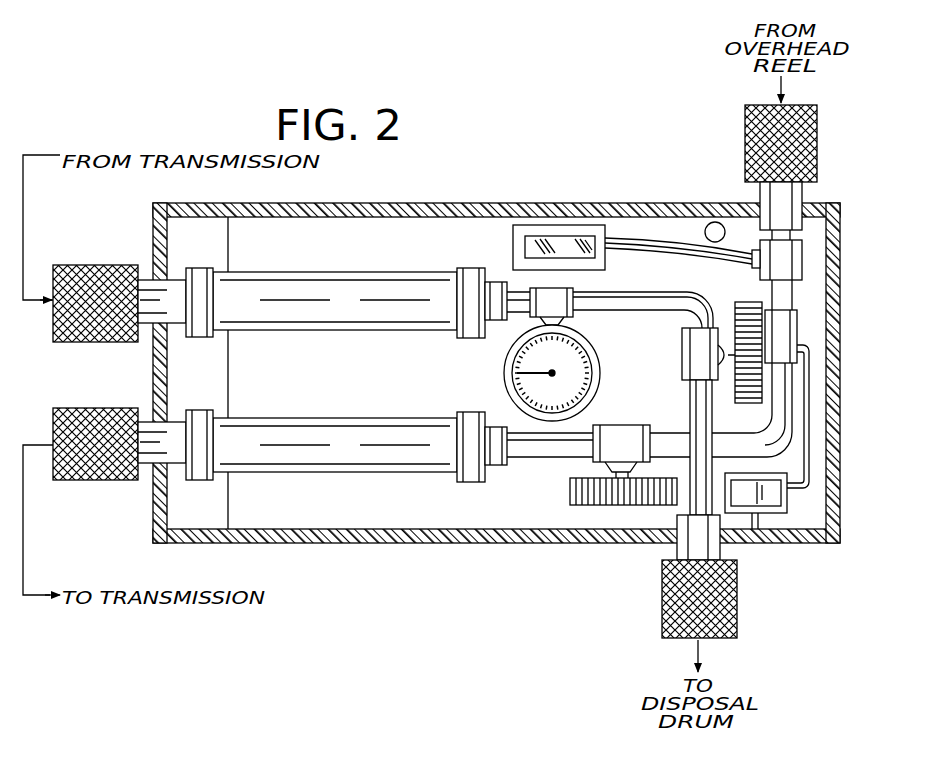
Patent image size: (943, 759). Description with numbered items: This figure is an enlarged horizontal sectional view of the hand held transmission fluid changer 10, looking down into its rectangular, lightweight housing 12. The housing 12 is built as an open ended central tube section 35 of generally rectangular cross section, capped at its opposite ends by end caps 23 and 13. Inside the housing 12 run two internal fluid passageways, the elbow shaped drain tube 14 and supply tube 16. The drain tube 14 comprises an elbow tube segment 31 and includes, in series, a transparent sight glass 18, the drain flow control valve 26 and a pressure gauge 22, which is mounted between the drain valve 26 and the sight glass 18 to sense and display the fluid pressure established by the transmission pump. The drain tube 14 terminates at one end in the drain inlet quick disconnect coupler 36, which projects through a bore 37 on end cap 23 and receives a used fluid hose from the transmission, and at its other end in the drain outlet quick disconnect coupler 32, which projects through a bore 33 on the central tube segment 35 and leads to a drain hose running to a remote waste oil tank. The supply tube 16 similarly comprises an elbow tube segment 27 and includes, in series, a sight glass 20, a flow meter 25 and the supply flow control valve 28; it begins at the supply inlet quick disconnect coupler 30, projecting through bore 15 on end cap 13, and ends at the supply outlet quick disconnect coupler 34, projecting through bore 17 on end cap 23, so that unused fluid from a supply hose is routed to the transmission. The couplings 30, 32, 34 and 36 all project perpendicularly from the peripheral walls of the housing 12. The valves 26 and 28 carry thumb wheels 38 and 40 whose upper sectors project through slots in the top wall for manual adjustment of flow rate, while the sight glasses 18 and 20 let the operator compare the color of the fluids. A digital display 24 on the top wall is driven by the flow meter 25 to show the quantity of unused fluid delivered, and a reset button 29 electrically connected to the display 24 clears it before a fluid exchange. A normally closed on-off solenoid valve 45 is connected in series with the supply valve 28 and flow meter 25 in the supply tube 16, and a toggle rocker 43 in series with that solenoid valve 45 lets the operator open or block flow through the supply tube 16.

The hand held transmission fluid changer 10 is at (566, 170).
The housing 12 is at (410, 203).
The end cap 13 is at (838, 408).
The drain tube 14 is at (624, 292).
The bore 15 is at (802, 206).
The supply tube 16 is at (770, 496).
The bore 17 is at (150, 463).
The sight glass 18 is at (358, 272).
The sight glass 20 is at (332, 418).
The pressure gauge 22 is at (599, 364).
The end cap 23 is at (191, 204).
The digital display 24 is at (513, 240).
The flow meter 25 is at (800, 258).
The drain flow control valve 26 is at (719, 327).
The elbow tube segment 27 is at (796, 451).
The supply flow control valve 28 is at (594, 469).
The reset button 29 is at (715, 222).
The supply inlet quick disconnect coupler 30 is at (745, 126).
The elbow tube segment 31 is at (697, 296).
The drain outlet quick disconnect coupler 32 is at (737, 604).
The bore 33 is at (688, 540).
The supply outlet quick disconnect coupler 34 is at (78, 480).
The central tube section 35 is at (378, 545).
The drain inlet quick disconnect coupler 36 is at (106, 265).
The bore 37 is at (150, 283).
The thumb wheel 38 is at (576, 488).
The thumb wheel 40 is at (746, 392).
The toggle rocker 43 is at (750, 532).
The on-off solenoid valve 45 is at (797, 322).